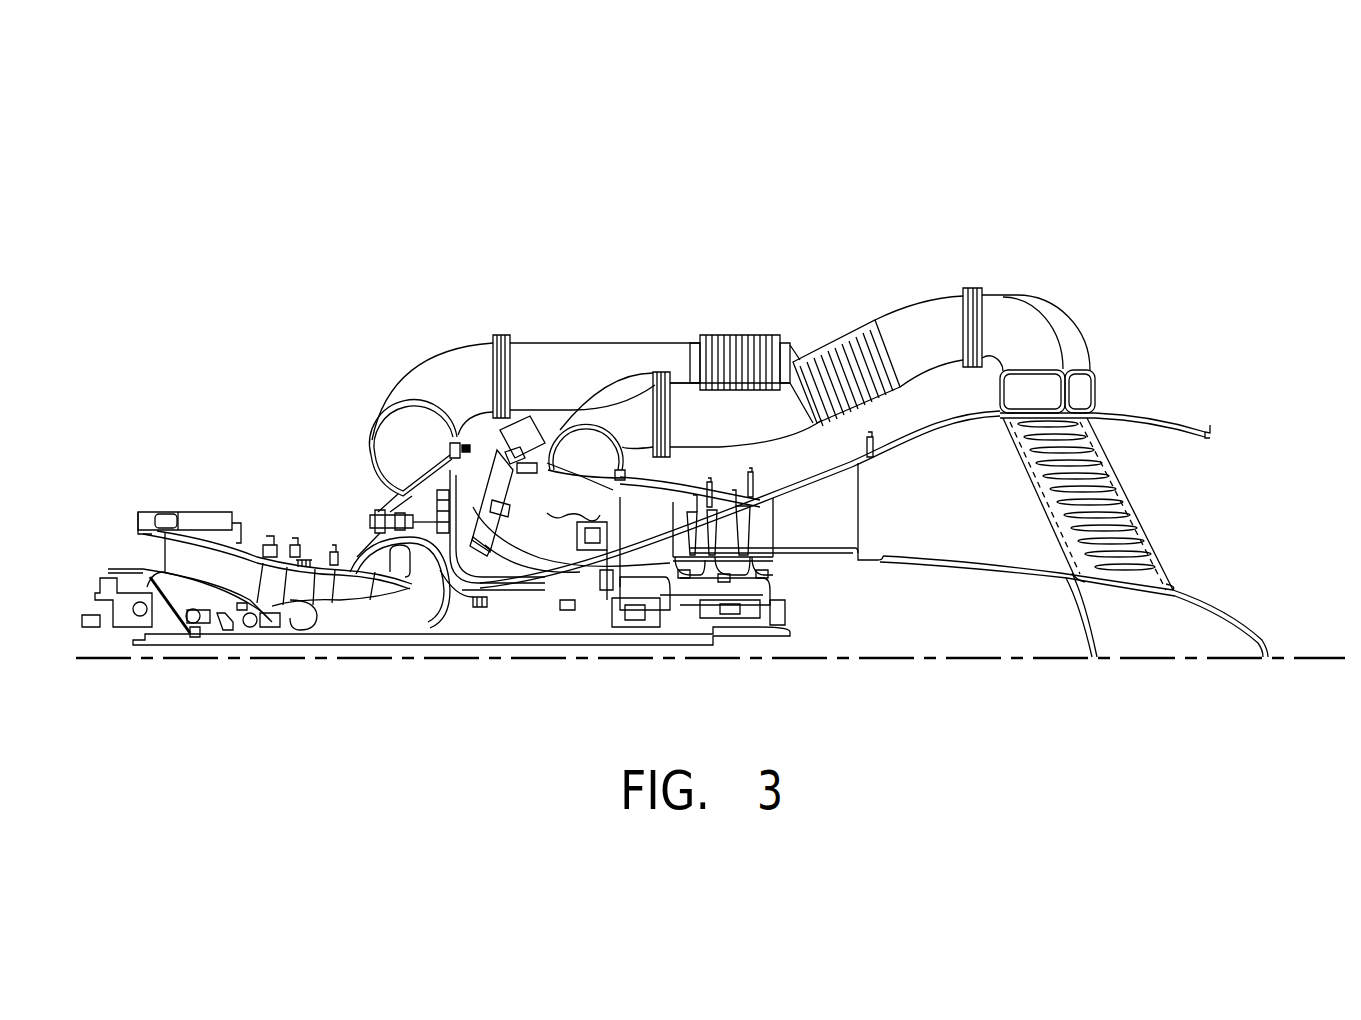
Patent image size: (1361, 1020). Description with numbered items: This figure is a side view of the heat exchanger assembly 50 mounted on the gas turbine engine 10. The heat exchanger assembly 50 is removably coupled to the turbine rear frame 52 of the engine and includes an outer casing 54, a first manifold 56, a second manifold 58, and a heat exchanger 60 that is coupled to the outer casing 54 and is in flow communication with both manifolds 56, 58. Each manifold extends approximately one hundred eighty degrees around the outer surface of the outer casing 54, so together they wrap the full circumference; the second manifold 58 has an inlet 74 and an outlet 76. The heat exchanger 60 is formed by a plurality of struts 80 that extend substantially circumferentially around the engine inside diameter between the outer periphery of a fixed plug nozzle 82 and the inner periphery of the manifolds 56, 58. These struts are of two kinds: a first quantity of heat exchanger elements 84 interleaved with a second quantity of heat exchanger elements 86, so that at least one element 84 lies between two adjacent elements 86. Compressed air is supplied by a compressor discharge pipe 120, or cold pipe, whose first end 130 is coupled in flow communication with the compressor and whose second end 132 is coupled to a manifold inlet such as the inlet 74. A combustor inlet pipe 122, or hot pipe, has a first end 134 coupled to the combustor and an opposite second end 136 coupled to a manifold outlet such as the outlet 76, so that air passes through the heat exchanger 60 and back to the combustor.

The gas turbine engine 10 is at (288, 466).
The heat exchanger assembly 50 is at (1020, 254).
The turbine rear frame 52 is at (812, 560).
The outer casing 54 is at (1170, 421).
The first manifold 56 is at (1082, 394).
The second manifold 58 is at (1020, 391).
The heat exchanger 60 is at (998, 455).
The inlet 74 is at (1067, 335).
The outlet 76 is at (1028, 323).
The struts 80 is at (1110, 470).
The fixed plug nozzle 82 is at (1265, 636).
The first quantity of heat exchanger elements 84 is at (1048, 482).
The second quantity of heat exchanger elements 86 is at (1145, 548).
The compressor discharge pipe 120 is at (598, 360).
The combustor inlet pipe 122 is at (760, 424).
The first end of compressor discharge pipe 130 is at (402, 442).
The second end of compressor discharge pipe 132 is at (790, 347).
The first end of combustor inlet pipe 134 is at (597, 460).
The duct flange 136 is at (970, 297).